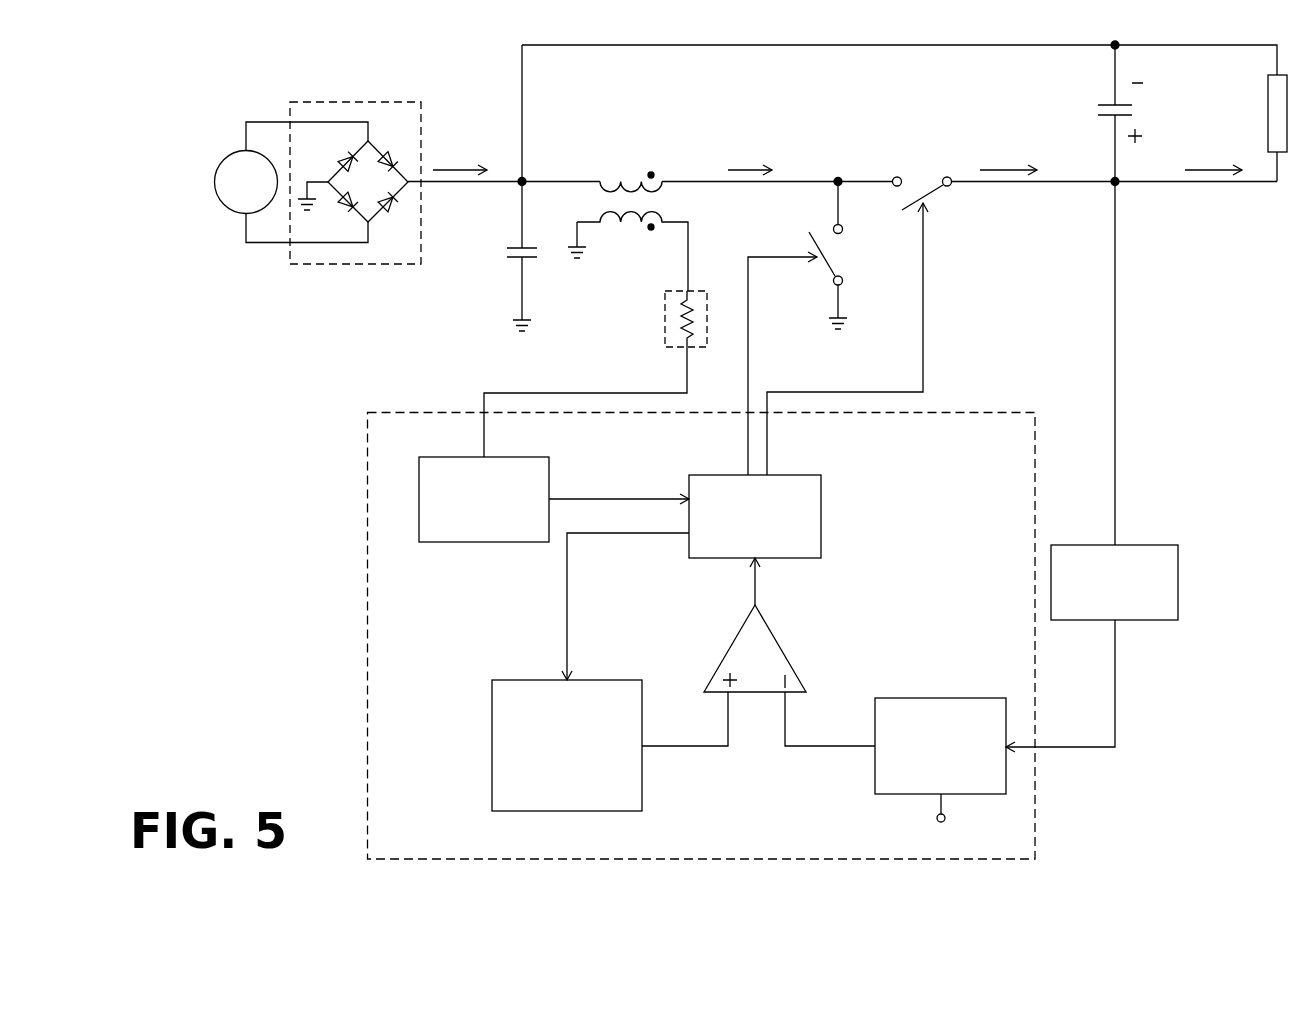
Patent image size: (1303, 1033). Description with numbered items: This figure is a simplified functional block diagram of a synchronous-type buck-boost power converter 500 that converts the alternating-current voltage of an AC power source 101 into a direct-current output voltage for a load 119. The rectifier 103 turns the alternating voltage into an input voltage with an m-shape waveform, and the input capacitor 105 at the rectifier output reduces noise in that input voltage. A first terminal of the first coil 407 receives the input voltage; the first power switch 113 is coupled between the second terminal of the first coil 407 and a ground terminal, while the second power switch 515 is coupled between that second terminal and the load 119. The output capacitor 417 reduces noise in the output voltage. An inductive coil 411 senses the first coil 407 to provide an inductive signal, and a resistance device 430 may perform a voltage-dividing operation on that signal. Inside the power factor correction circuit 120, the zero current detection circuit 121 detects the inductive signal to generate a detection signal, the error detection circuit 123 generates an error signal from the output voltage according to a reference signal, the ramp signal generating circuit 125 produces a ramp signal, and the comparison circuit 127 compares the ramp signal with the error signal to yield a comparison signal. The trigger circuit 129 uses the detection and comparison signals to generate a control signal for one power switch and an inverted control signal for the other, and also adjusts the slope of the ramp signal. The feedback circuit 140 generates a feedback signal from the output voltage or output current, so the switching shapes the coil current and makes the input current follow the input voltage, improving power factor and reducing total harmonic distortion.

The synchronous-type buck-boost power converter 500 is at (232, 82).
The AC power source 101 is at (214, 182).
The rectifier 103 is at (353, 265).
The input capacitor 105 is at (507, 250).
The first coil 407 is at (630, 178).
The inductive coil 411 is at (627, 221).
The resistance device 430 is at (664, 320).
The first power switch 113 is at (838, 257).
The second power switch 515 is at (925, 177).
The output capacitor 417 is at (1098, 110).
The load 119 is at (1268, 112).
The power factor correction circuit 120 is at (367, 637).
The zero current detection circuit 121 is at (484, 543).
The trigger circuit 129 is at (737, 474).
The comparison circuit 127 is at (731, 645).
The ramp signal generating circuit 125 is at (567, 811).
The error detection circuit 123 is at (940, 697).
The feedback circuit 140 is at (1180, 582).